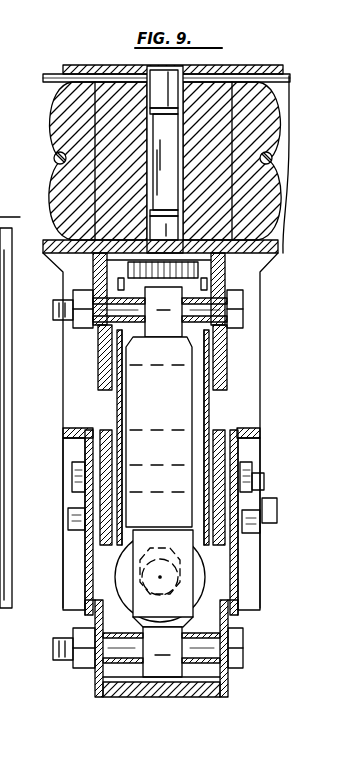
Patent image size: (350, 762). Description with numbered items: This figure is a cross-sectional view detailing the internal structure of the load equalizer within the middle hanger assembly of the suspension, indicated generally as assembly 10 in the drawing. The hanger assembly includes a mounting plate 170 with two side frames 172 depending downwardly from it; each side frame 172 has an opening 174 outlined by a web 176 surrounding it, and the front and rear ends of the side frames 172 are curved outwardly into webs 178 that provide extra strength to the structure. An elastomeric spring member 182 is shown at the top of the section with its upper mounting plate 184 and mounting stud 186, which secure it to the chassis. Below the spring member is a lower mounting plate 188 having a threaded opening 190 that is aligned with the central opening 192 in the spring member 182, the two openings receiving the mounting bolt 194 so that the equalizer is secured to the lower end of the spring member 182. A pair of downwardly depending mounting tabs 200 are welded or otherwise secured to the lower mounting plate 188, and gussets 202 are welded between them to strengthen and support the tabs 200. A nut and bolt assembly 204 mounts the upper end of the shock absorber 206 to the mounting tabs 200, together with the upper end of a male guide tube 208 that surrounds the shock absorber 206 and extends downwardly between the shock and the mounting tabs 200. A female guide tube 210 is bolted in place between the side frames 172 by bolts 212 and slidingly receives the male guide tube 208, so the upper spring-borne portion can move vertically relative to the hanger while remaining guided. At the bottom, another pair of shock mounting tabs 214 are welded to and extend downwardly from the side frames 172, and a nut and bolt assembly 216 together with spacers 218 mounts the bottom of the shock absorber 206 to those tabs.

The suspension assembly 10 is at (10, 200).
The mounting plate 170 is at (245, 66).
The side frames 172 is at (72, 612).
The opening 174 is at (255, 434).
The web 176 is at (65, 430).
The webs 178 is at (20, 436).
The elastomeric spring member 182 is at (58, 102).
The upper mounting plate 184 is at (44, 76).
The mounting stud 186 is at (157, 72).
The lower mounting plate 188 is at (68, 274).
The threaded opening 190 is at (150, 236).
The central opening 192 is at (152, 124).
The mounting bolt 194 is at (150, 220).
The mounting tabs 200 is at (105, 360).
The gussets 202 is at (80, 300).
The nut and bolt assembly 204 is at (120, 336).
The shock absorber 206 is at (118, 535).
The male guide tube 208 is at (97, 584).
The female guide tube 210 is at (105, 566).
The bolts 212 is at (74, 475).
The shock mounting tabs 214 is at (100, 697).
The nut and bolt assembly 216 is at (53, 650).
The spacers 218 is at (95, 685).